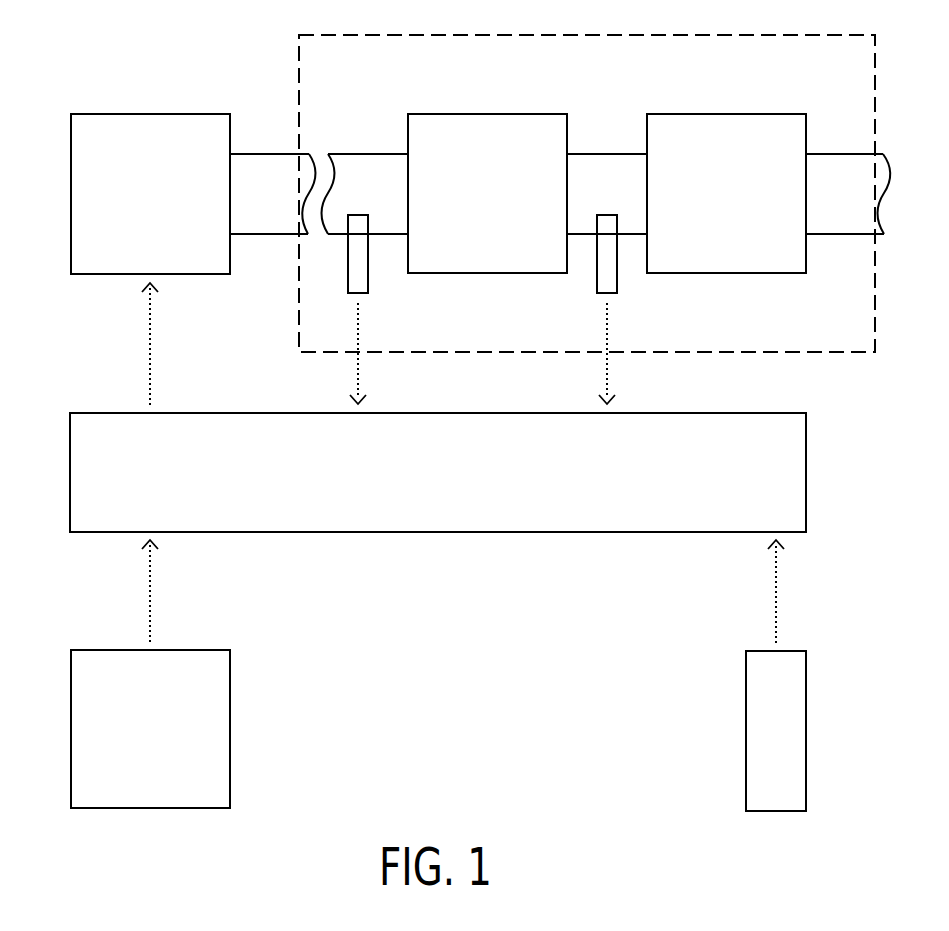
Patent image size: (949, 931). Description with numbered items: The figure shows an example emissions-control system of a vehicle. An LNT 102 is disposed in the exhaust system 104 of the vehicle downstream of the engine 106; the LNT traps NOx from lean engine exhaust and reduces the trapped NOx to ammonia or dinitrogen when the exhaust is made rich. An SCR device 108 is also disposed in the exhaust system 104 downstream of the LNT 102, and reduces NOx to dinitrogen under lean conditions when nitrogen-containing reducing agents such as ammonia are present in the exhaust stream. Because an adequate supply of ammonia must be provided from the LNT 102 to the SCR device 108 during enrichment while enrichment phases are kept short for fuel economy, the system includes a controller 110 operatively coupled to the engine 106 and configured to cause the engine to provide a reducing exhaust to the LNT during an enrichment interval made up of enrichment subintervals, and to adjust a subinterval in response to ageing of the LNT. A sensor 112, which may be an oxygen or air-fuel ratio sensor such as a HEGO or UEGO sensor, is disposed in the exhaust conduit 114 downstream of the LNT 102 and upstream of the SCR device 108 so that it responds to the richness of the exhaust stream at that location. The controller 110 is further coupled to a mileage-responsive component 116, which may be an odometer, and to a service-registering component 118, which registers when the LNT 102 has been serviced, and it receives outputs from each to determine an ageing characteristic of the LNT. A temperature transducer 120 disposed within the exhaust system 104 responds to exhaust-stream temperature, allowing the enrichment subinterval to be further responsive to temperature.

The LNT 102 is at (468, 207).
The exhaust system 104 is at (875, 333).
The engine 106 is at (131, 207).
The SCR device 108 is at (707, 207).
The controller 110 is at (419, 485).
The sensor 112 is at (617, 273).
The exhaust conduit 114 is at (585, 151).
The mileage-responsive component 116 is at (131, 743).
The service-registering component 118 is at (757, 743).
The temperature transducer 120 is at (368, 273).